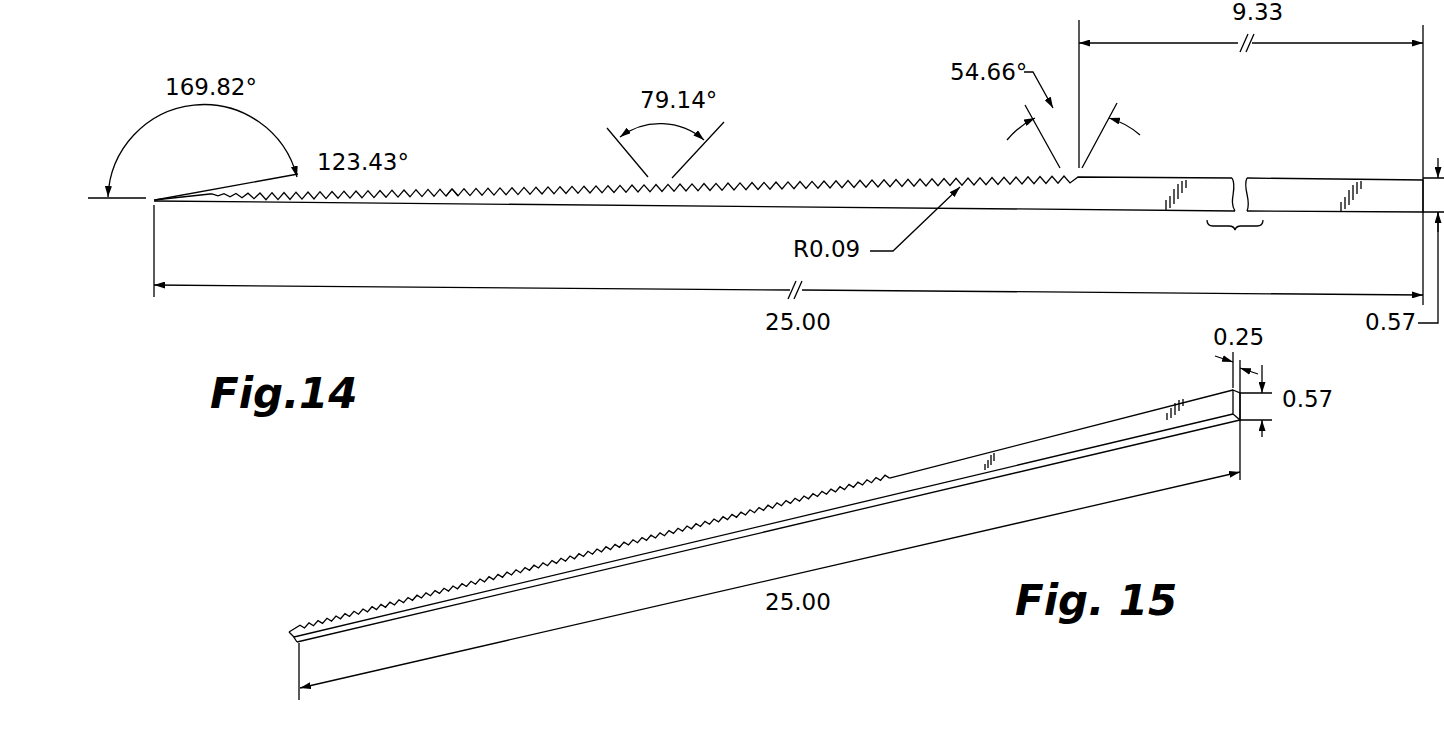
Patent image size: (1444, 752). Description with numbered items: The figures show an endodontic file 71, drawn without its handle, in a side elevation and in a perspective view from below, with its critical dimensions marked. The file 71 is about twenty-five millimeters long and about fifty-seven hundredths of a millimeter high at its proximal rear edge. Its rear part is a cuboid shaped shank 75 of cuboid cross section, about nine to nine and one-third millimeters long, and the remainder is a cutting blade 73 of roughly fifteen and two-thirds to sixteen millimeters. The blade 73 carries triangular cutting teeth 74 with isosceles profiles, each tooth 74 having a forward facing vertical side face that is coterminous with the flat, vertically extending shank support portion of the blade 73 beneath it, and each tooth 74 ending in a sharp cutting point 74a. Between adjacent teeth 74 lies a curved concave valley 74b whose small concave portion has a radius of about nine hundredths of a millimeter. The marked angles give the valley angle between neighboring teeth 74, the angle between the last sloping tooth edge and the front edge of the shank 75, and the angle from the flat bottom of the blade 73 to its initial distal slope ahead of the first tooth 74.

In FIG. 14, the endodontic file 71 is at (788, 173).
In FIG. 15, the endodontic file 71 is at (764, 516).
In FIG. 14, the cutting blade 73 is at (587, 204).
In FIG. 15, the cutting blade 73 is at (590, 565).
In FIG. 14, the cutting teeth 74 is at (548, 178).
In FIG. 15, the cutting teeth 74 is at (442, 586).
In FIG. 14, the sharp cutting point 74a is at (450, 191).
In FIG. 14, the curved concave valley 74b is at (453, 195).
In FIG. 14, the cuboid shaped shank 75 is at (1310, 199).
In FIG. 15, the cuboid shaped shank 75 is at (1067, 437).